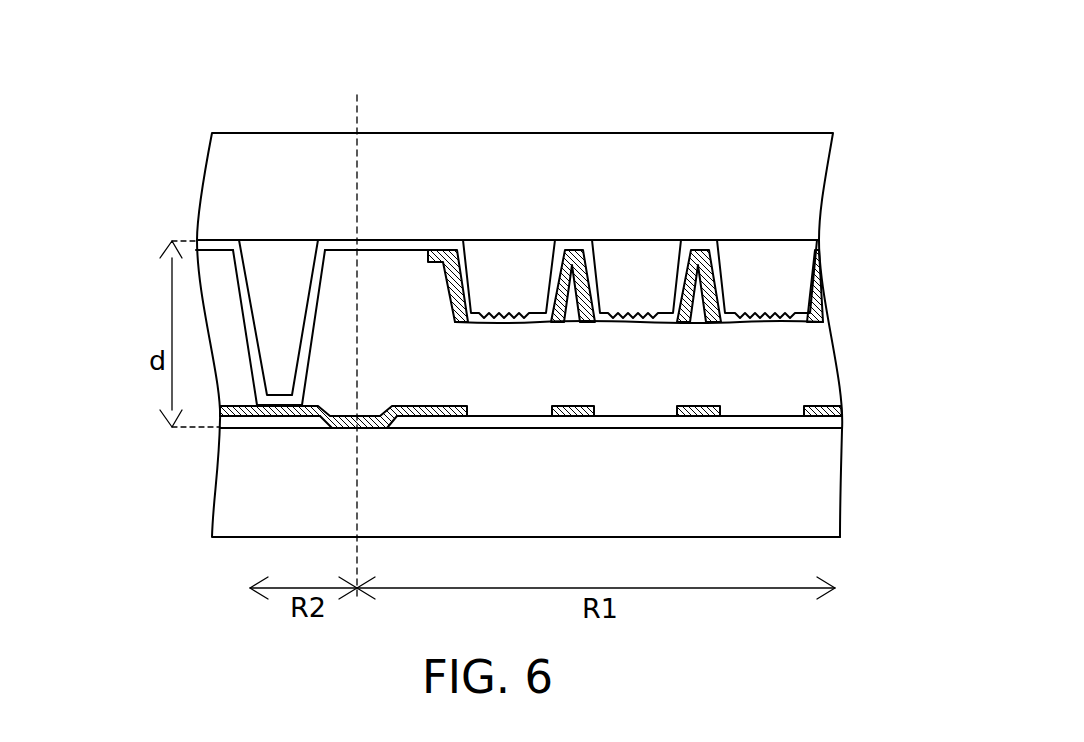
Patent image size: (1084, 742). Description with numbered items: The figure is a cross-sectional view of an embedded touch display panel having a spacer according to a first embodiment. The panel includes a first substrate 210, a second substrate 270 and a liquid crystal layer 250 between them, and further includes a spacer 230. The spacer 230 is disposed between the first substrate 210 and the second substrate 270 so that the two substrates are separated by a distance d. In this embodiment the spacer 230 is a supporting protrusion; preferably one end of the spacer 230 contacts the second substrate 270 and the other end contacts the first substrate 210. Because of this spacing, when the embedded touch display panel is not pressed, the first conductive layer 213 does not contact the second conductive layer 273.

The first substrate 210 is at (147, 133).
The first conductive layer 213 is at (815, 243).
The spacer 230 is at (297, 258).
The liquid crystal layer 250 is at (827, 355).
The second substrate 270 is at (147, 404).
The second conductive layer 273 is at (805, 423).